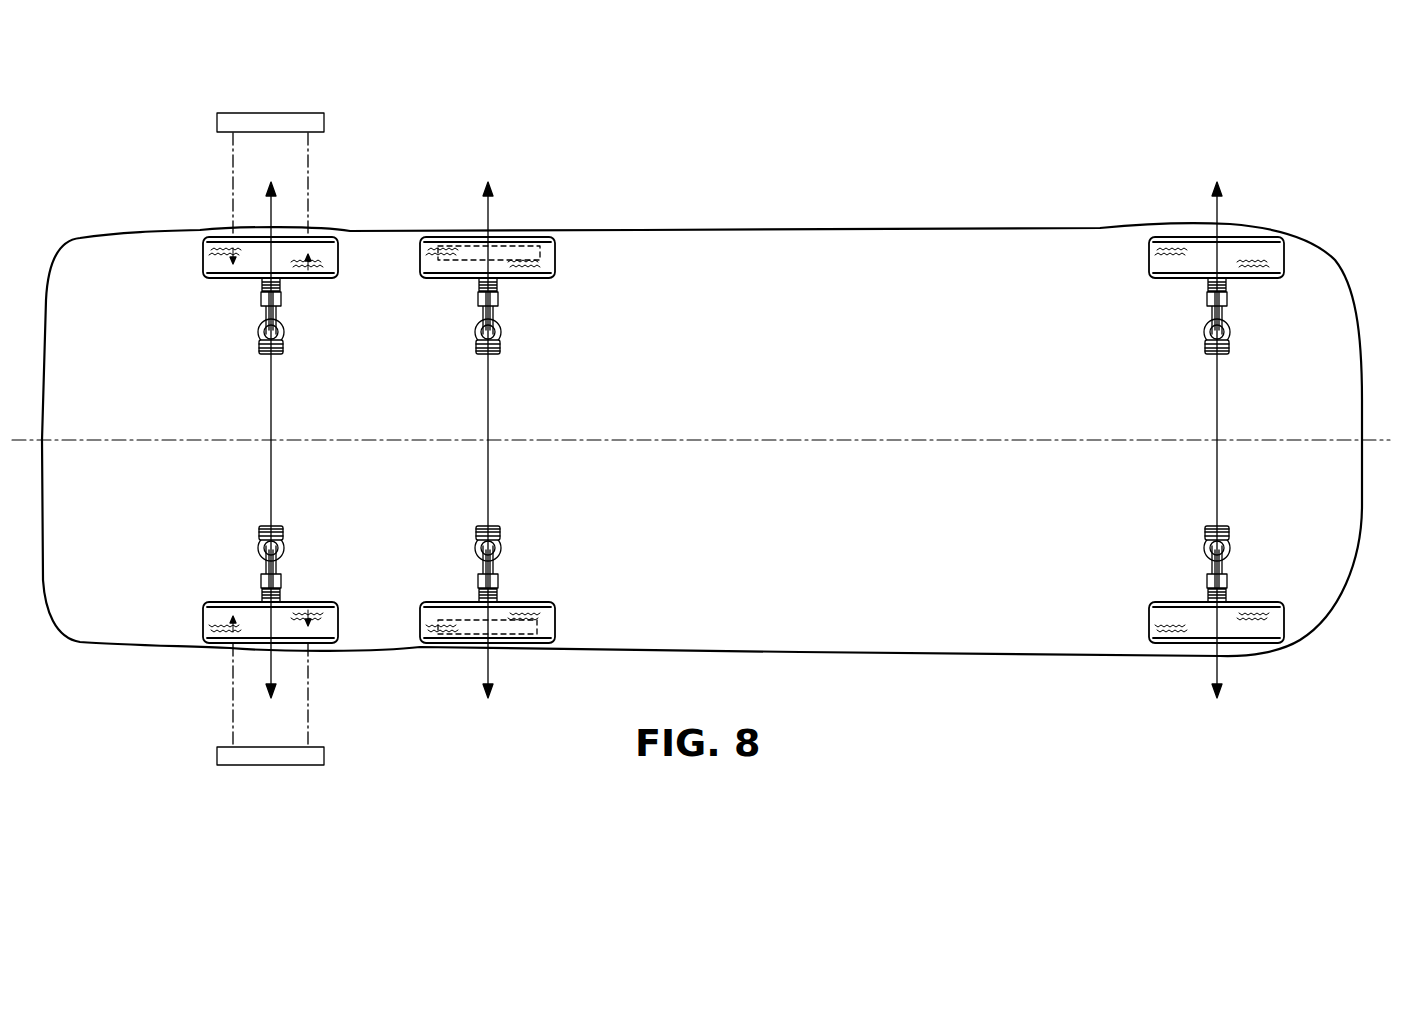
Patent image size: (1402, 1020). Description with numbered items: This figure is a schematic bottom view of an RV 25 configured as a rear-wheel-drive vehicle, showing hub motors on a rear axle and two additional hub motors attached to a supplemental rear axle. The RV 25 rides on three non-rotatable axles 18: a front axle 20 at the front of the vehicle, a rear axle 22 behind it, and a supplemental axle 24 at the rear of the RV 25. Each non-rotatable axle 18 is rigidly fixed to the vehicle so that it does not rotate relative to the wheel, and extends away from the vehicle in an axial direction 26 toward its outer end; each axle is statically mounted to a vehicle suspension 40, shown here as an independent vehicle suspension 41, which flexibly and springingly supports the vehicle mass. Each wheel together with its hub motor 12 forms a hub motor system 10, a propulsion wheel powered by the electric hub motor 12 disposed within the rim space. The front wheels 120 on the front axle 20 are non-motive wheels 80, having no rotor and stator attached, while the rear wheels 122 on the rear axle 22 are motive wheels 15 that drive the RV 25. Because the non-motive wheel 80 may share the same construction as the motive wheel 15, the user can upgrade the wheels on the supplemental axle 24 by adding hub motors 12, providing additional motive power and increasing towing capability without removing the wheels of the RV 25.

The hub motor system 10 is at (778, 412).
The hub motor 12 is at (324, 127).
The motive wheel 15 is at (778, 412).
The non-rotatable axle 18 is at (708, 440).
The front axle 20 is at (1208, 315).
The rear axle 22 is at (480, 315).
The supplemental axle 24 is at (262, 315).
The RV 25 is at (1023, 230).
The axial direction 26 is at (273, 203).
The vehicle suspension 40 is at (796, 440).
The independent vehicle suspension 41 is at (284, 344).
The non-motive wheel 80 is at (778, 412).
The front wheel 120 is at (1283, 280).
The rear wheel 122 is at (778, 440).